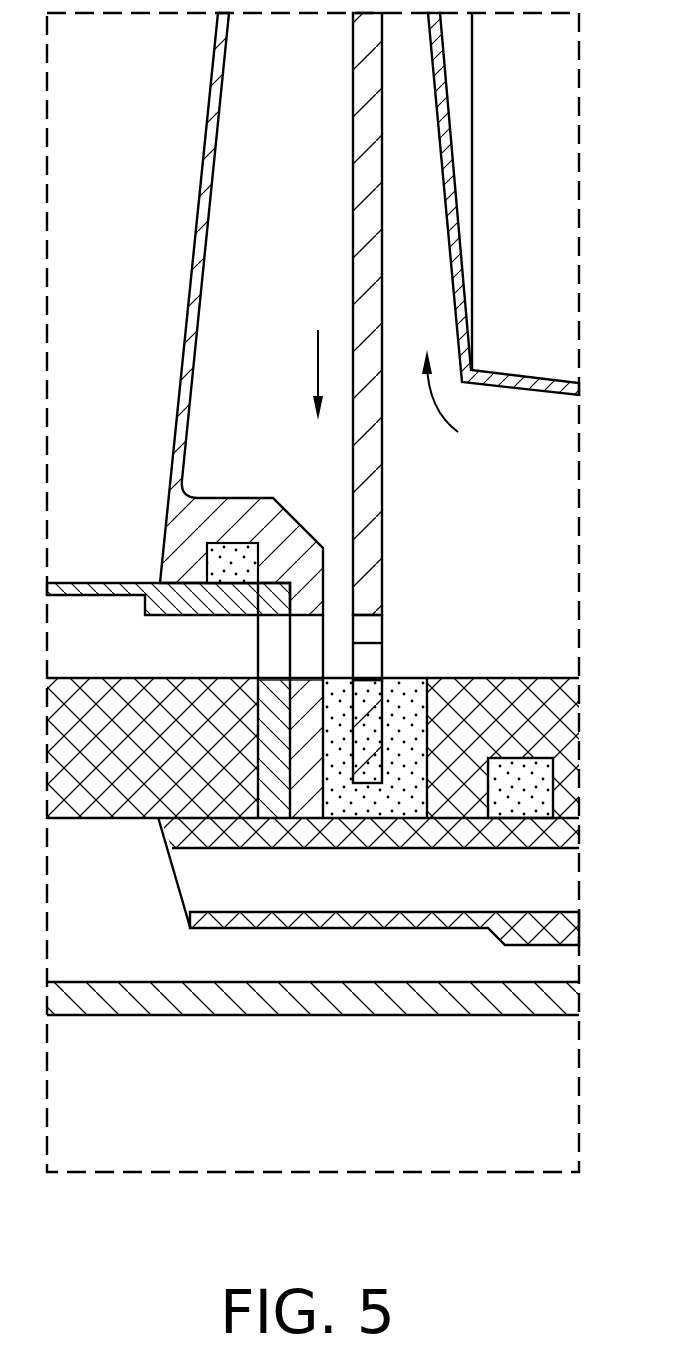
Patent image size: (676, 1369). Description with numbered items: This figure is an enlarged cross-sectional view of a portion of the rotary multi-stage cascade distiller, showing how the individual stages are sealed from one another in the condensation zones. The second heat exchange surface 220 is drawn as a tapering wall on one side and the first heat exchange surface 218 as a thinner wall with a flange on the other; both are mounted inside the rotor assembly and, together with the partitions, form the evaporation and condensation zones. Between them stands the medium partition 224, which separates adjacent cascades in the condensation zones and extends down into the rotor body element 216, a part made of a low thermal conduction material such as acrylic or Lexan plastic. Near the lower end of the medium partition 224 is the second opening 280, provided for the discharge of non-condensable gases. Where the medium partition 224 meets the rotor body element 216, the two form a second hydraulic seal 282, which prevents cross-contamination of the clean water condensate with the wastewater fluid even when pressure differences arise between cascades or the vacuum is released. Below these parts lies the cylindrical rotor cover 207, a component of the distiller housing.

The second heat exchange surface 220 is at (192, 273).
The first heat exchange surface 218 is at (456, 187).
The medium partition 224 is at (383, 482).
The second opening 280 is at (382, 620).
The second hydraulic seal 282 is at (403, 678).
The rotor body element 216 is at (117, 807).
The cylindrical rotor cover 207 is at (382, 1008).